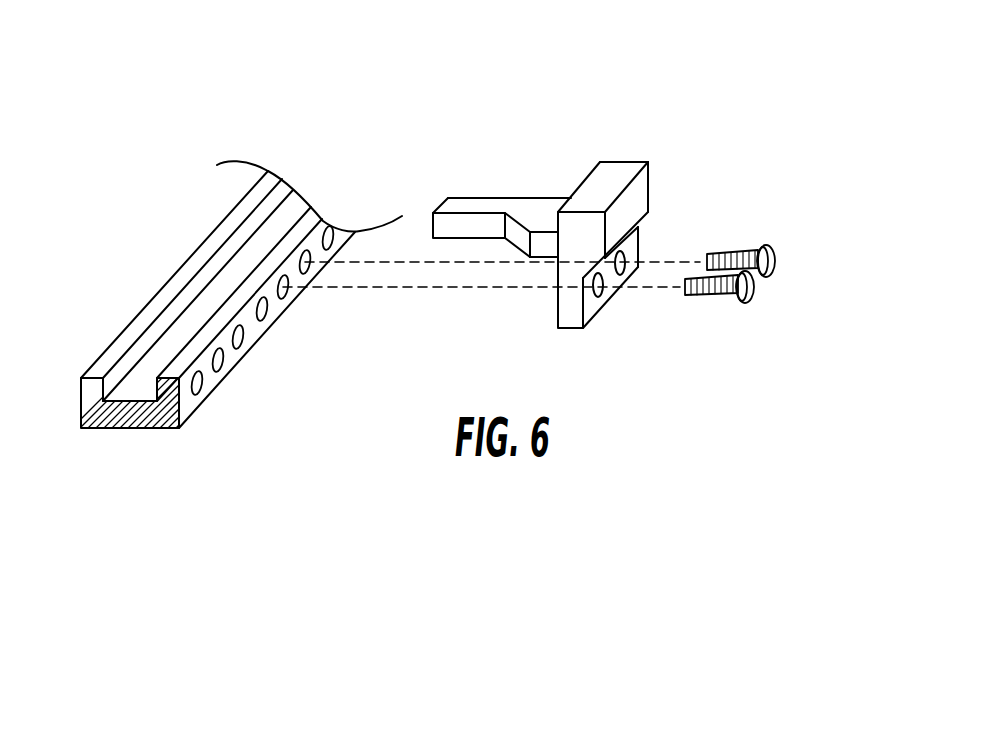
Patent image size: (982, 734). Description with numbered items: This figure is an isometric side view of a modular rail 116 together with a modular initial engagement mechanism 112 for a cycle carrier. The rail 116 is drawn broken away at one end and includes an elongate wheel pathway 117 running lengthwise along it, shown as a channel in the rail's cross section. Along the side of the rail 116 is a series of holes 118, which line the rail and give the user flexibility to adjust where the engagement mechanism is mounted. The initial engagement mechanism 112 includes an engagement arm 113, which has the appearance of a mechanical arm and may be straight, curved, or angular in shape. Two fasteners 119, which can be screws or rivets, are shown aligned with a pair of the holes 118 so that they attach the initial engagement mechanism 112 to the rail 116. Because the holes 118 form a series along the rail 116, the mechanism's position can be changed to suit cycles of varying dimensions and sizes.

The initial engagement mechanism 112 is at (703, 124).
The engagement arm 113 is at (470, 207).
The rail 116 is at (238, 361).
The elongate wheel pathway 117 is at (260, 250).
The holes 118 is at (288, 297).
The fasteners 119 is at (777, 263).